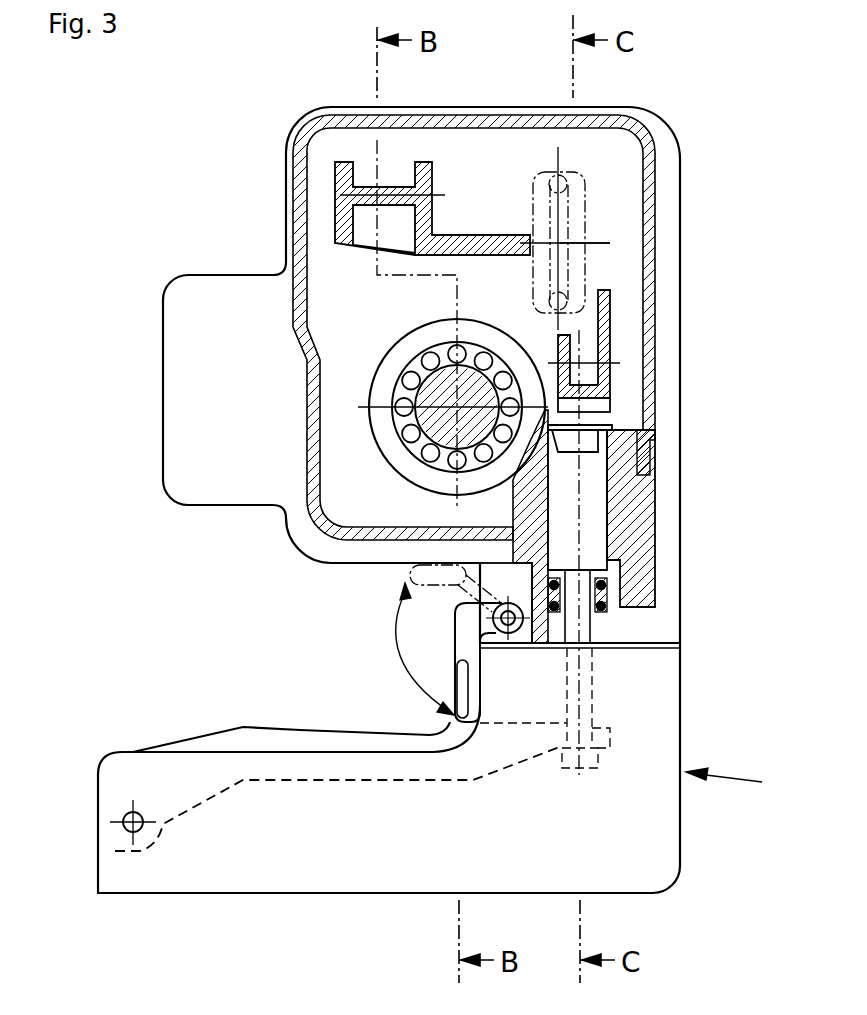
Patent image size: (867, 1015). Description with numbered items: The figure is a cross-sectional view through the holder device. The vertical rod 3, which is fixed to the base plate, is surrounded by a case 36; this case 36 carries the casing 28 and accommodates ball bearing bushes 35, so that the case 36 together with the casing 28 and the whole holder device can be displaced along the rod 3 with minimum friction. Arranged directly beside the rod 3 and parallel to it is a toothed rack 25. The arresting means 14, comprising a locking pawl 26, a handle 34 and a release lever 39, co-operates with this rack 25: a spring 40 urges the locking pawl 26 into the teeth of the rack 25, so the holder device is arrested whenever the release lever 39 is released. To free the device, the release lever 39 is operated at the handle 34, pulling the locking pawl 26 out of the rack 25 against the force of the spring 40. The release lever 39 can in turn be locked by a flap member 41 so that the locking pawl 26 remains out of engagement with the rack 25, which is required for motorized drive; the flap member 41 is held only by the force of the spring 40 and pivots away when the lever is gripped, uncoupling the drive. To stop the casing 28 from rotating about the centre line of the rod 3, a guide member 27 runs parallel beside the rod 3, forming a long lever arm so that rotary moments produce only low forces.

The rod 3 is at (437, 422).
The arresting means 14 is at (724, 763).
The rack 25 is at (592, 396).
The locking pawl 26 is at (593, 520).
The guide member 27 is at (347, 190).
The casing 28 is at (300, 219).
The handle 34 is at (645, 825).
The ball bearing bushes 35 is at (426, 353).
The case 36 is at (390, 372).
The release lever 39 is at (240, 740).
The spring 40 is at (605, 585).
The flap member 41 is at (460, 692).